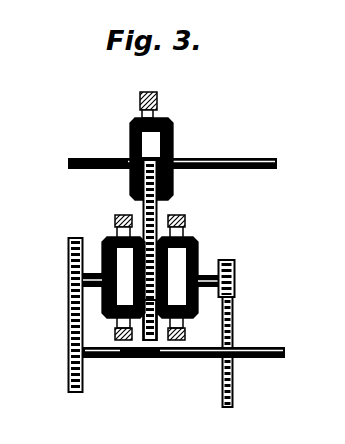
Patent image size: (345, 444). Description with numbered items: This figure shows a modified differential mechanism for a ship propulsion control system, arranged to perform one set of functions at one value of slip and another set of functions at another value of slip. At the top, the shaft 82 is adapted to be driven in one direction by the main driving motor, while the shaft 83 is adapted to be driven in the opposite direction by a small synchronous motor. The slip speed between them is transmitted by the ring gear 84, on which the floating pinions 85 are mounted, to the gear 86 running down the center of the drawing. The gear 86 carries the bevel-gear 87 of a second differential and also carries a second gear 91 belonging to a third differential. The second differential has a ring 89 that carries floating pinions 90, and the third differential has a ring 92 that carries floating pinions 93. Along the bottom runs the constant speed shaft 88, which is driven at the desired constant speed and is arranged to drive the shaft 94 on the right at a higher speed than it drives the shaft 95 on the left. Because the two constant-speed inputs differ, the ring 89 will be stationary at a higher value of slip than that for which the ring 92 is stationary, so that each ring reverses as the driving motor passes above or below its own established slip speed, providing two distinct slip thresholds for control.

The shaft 82 is at (94, 158).
The shaft 83 is at (217, 158).
The ring gear 84 is at (143, 212).
The floating pinions 85 is at (160, 120).
The gear 86 is at (146, 341).
The bevel-gear 87 is at (157, 341).
The constant speed shaft 88 is at (252, 358).
The ring 89 is at (178, 214).
The floating pinions 90 is at (196, 236).
The second gear 91 is at (138, 359).
The ring 92 is at (133, 214).
The floating pinions 93 is at (103, 236).
The shaft 94 is at (210, 275).
The shaft 95 is at (68, 262).